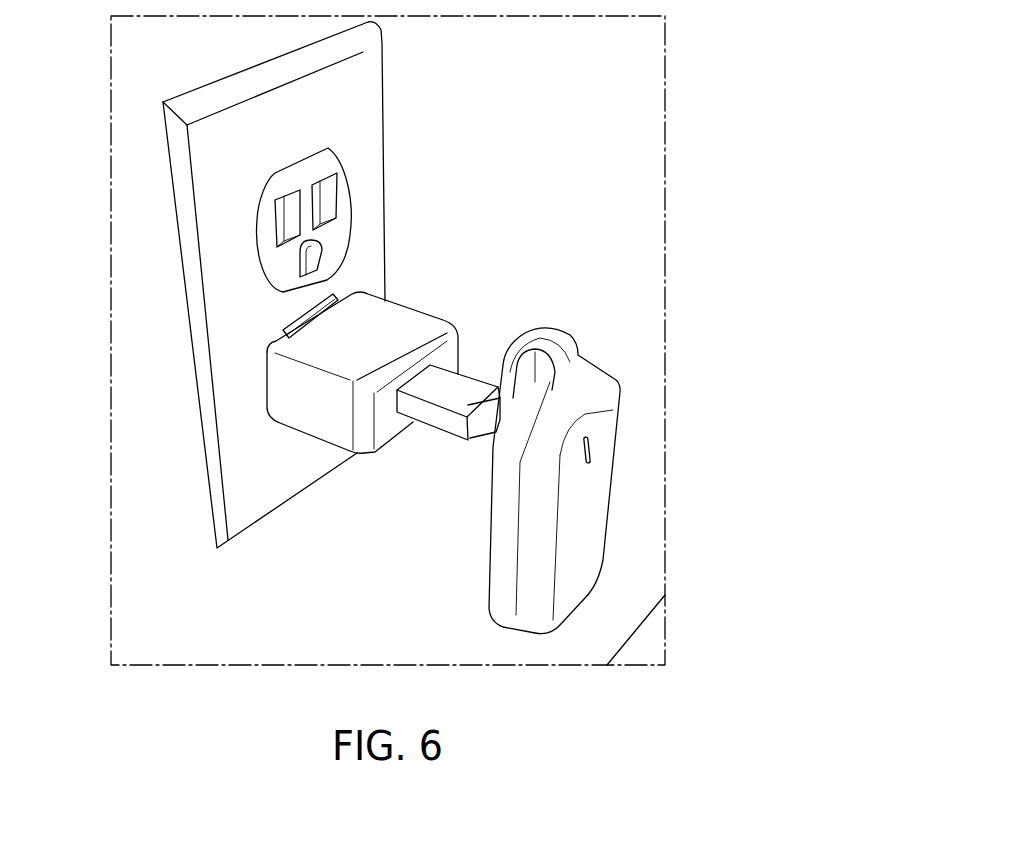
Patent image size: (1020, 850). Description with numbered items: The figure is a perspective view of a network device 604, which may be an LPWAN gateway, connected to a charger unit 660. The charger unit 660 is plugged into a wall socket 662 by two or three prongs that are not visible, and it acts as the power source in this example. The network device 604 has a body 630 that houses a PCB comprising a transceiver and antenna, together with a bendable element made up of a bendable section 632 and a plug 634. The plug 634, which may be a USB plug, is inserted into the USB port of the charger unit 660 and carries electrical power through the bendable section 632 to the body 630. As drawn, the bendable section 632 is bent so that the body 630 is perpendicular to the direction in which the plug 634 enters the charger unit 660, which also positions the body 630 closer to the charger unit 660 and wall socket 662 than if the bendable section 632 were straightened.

The network device 604 is at (614, 433).
The body 630 is at (590, 517).
The bendable section 632 is at (522, 332).
The plug 634 is at (440, 428).
The charger unit 660 is at (408, 293).
The wall socket 662 is at (233, 317).